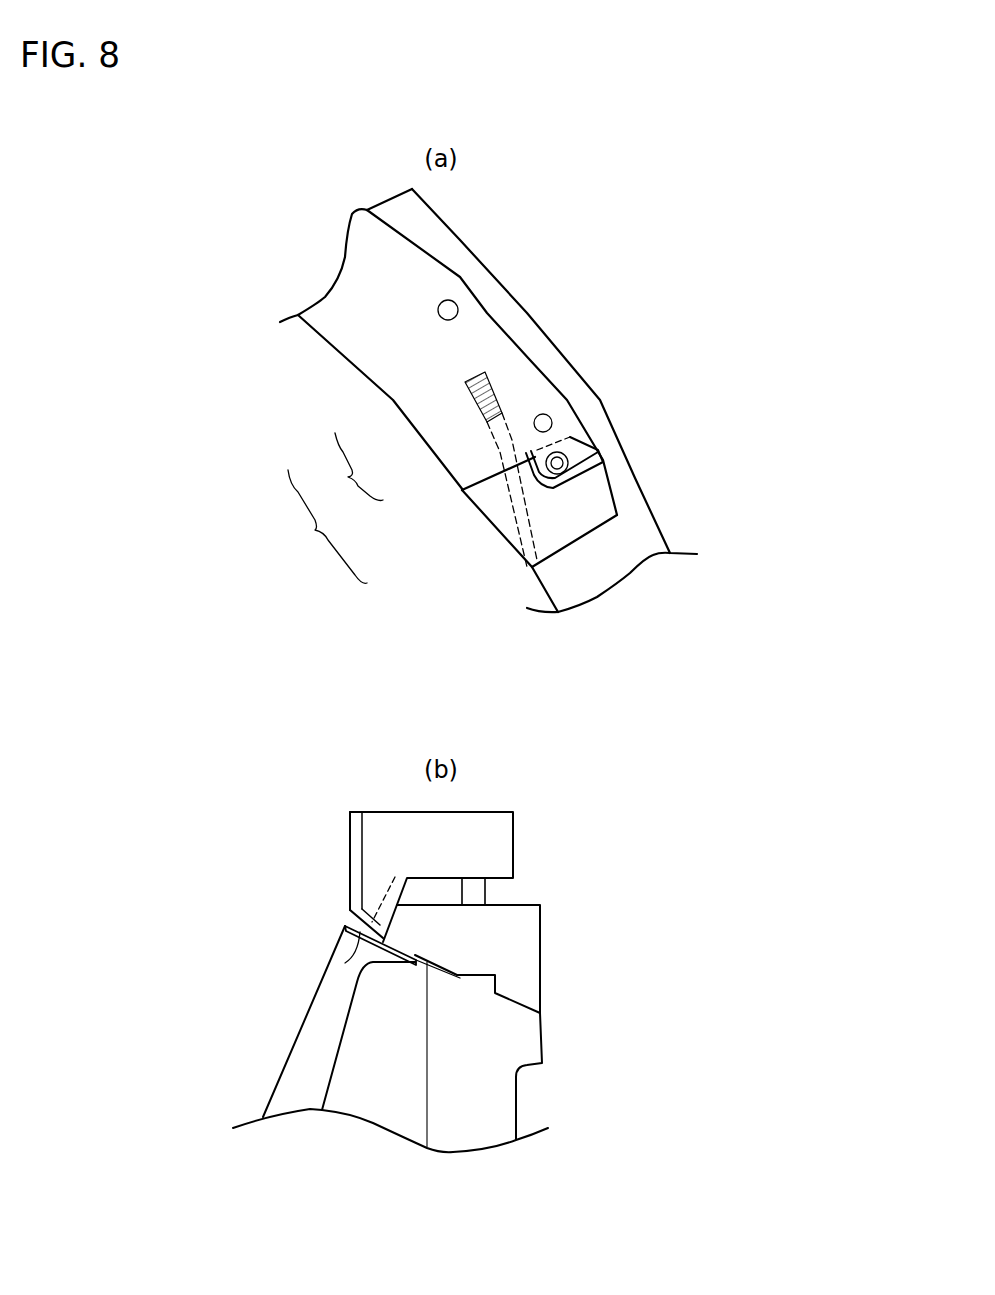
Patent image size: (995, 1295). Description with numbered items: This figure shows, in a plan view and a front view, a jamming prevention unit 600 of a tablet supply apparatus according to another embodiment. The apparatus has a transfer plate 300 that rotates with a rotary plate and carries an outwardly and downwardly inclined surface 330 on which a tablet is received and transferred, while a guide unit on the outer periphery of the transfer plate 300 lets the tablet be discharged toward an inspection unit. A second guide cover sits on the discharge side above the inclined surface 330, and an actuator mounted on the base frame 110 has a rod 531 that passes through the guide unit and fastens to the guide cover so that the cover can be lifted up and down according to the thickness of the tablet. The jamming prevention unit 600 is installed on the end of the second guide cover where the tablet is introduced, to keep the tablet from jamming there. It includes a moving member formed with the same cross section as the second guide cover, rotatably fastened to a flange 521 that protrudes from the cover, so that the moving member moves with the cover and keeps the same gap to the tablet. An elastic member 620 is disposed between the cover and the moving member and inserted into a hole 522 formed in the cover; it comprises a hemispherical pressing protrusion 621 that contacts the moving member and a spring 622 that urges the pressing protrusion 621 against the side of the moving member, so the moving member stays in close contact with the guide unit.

The base frame 110 is at (502, 1102).
The transfer plate 300 is at (307, 1070).
The inclined surface 330 is at (335, 960).
The flange 521 is at (578, 448).
The hole 522 is at (497, 388).
The rod 531 is at (478, 893).
The jamming prevention unit 600 is at (316, 526).
The elastic member 620 is at (340, 467).
The pressing protrusion 621 is at (510, 432).
The spring 622 is at (465, 400).